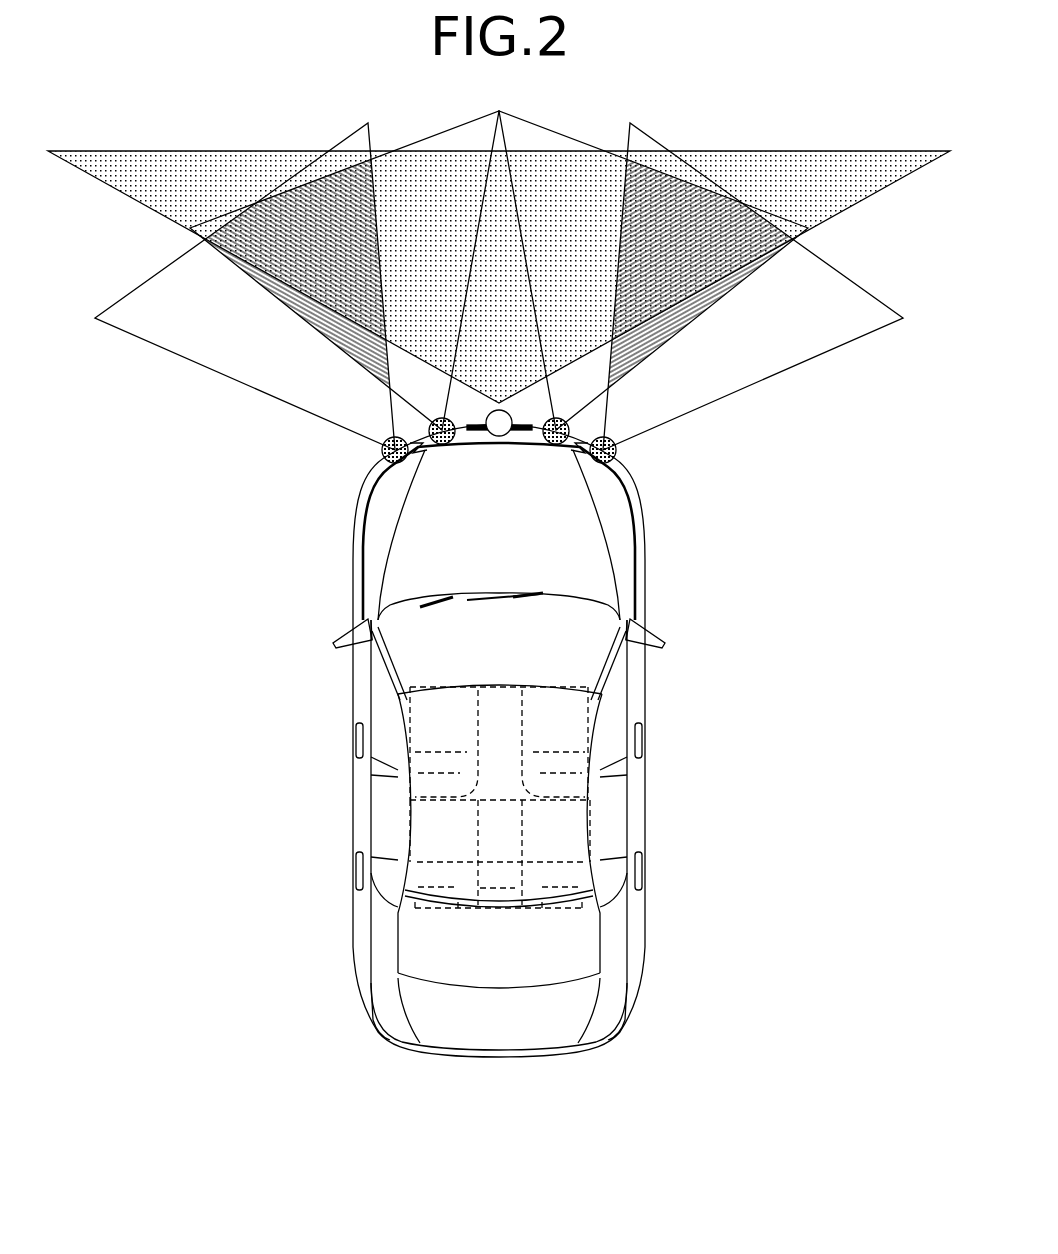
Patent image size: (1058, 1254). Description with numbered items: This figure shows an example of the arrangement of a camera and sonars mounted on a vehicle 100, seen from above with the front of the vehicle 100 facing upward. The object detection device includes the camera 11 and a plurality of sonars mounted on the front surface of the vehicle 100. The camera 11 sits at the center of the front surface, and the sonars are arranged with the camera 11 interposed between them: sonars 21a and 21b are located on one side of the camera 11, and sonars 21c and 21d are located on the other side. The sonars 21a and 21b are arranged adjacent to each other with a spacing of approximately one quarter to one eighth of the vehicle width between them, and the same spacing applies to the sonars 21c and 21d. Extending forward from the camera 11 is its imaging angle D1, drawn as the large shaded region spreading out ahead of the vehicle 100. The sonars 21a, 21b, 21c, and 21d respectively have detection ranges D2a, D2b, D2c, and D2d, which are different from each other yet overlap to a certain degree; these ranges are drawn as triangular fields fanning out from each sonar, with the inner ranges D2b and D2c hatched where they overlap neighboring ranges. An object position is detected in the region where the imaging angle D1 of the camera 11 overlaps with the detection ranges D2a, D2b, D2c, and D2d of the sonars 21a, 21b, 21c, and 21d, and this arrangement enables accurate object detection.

The imaging angle D1 is at (873, 151).
The detection range D2a is at (190, 360).
The detection range D2b is at (403, 397).
The detection range D2c is at (595, 397).
The detection range D2d is at (808, 360).
The camera 11 is at (480, 440).
The sonar 21a is at (383, 445).
The sonar 21b is at (466, 440).
The sonar 21c is at (532, 440).
The sonar 21d is at (615, 445).
The vehicle 100 is at (637, 923).